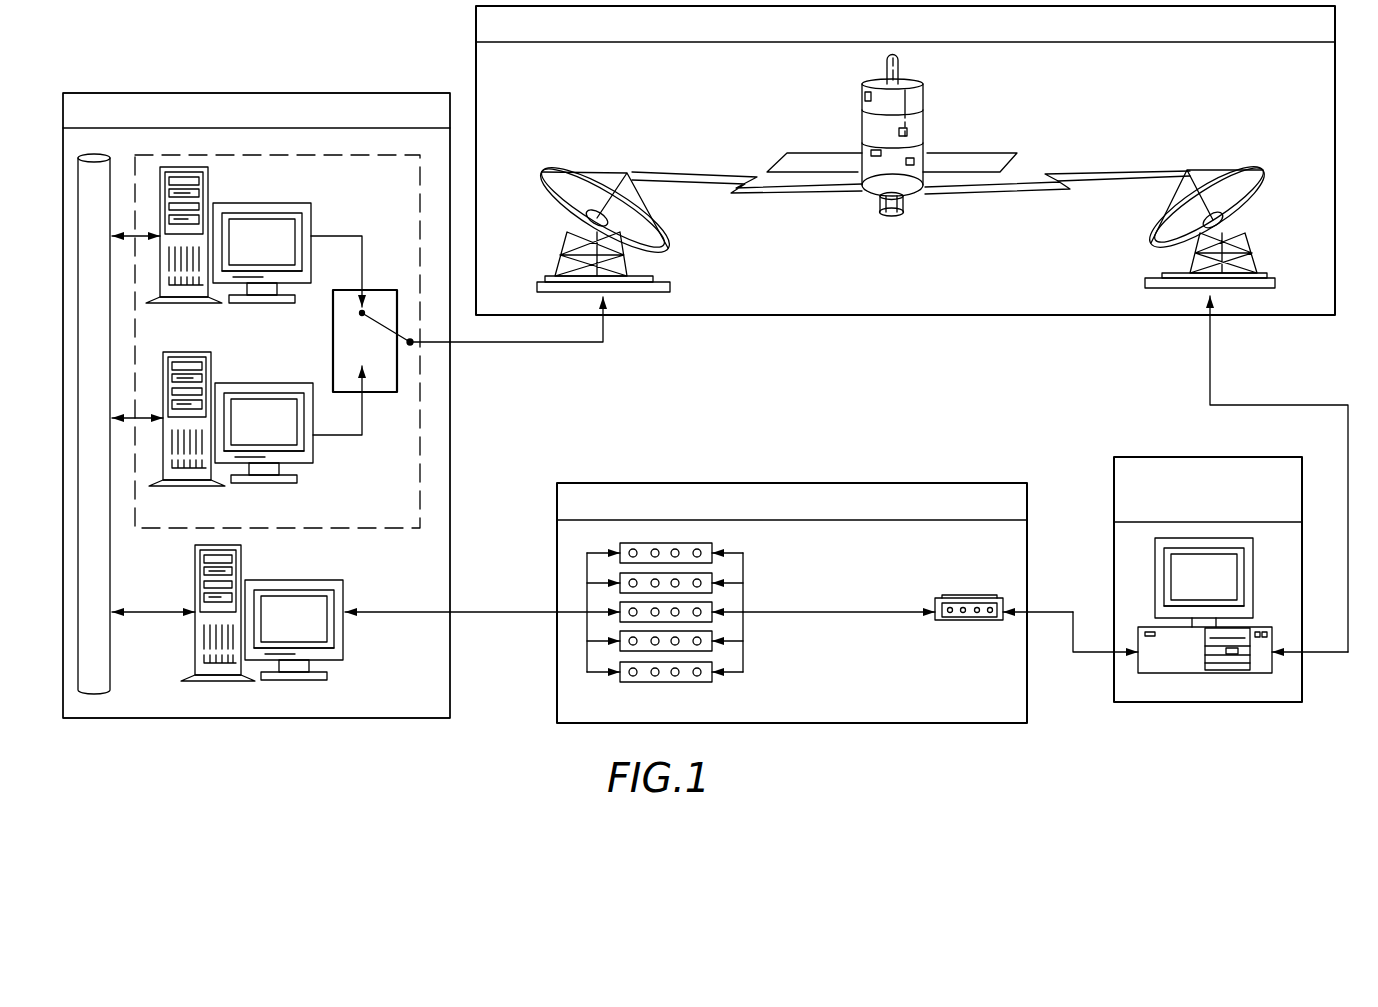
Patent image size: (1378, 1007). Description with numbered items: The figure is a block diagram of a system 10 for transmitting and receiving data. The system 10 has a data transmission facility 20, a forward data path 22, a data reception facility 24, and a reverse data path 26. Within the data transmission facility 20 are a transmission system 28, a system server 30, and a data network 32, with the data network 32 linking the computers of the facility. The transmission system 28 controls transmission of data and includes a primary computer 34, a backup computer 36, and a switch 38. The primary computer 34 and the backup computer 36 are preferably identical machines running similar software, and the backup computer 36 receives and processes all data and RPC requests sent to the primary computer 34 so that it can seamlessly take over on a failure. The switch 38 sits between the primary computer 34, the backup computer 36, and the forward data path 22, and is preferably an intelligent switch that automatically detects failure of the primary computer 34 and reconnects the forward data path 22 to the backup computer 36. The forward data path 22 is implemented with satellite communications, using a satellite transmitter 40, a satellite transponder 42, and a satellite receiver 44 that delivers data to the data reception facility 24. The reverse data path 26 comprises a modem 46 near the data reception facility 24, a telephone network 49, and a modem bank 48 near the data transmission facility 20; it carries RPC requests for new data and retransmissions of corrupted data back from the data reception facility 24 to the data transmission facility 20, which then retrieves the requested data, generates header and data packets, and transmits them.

The system 10 is at (246, 75).
The data transmission facility 20 is at (450, 553).
The forward data path 22 is at (1335, 213).
The data reception facility 24 is at (1303, 613).
The reverse data path 26 is at (798, 483).
The transmission system 28 is at (420, 441).
The system server 30 is at (325, 580).
The data network 32 is at (112, 590).
The primary computer 34 is at (266, 203).
The backup computer 36 is at (266, 383).
The switch 38 is at (372, 290).
The satellite transmitter 40 is at (549, 204).
The satellite transponder 42 is at (926, 126).
The satellite receiver 44 is at (1153, 250).
The modem 46 is at (963, 597).
The modem bank 48 is at (650, 543).
The telephone network 49 is at (813, 612).